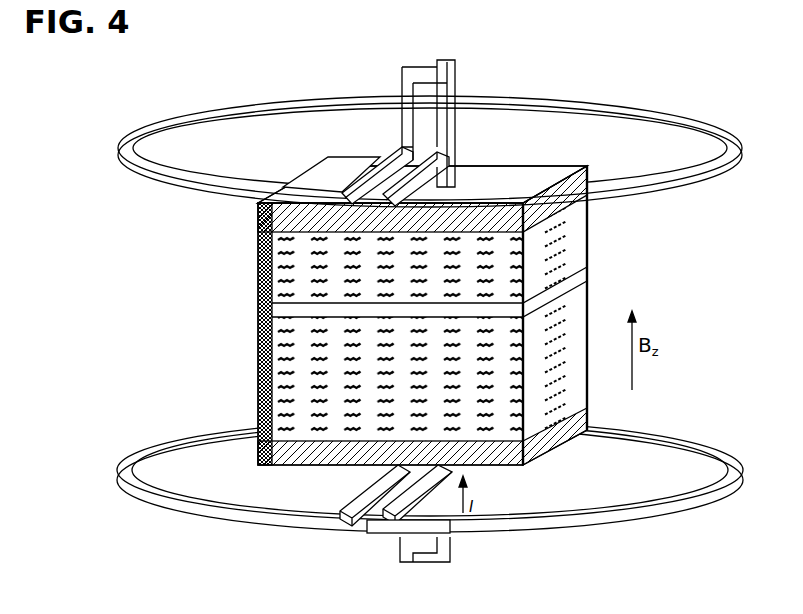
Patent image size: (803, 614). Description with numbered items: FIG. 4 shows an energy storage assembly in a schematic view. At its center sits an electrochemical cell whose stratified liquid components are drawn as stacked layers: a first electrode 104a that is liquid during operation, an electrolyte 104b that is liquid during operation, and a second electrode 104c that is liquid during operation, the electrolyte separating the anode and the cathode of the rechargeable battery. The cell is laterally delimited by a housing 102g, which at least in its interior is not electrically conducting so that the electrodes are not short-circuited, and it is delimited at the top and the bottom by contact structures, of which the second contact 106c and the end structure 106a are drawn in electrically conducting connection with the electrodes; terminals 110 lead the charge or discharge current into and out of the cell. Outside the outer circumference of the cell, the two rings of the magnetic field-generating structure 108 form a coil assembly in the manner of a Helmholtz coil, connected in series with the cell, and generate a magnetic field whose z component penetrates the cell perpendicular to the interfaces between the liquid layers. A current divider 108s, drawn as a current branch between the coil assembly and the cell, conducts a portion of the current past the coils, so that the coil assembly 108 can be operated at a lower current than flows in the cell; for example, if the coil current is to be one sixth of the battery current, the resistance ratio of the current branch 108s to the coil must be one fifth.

The housing 102g is at (275, 342).
The first electrode 104a is at (275, 372).
The electrolyte 104b is at (275, 307).
The second electrode 104c is at (275, 265).
The first insulating end layer 106a is at (262, 450).
The second contact 106c is at (262, 220).
The magnetic field-generating structure 108 is at (710, 167).
The current divider 108s is at (447, 112).
The terminal 110 is at (448, 57).